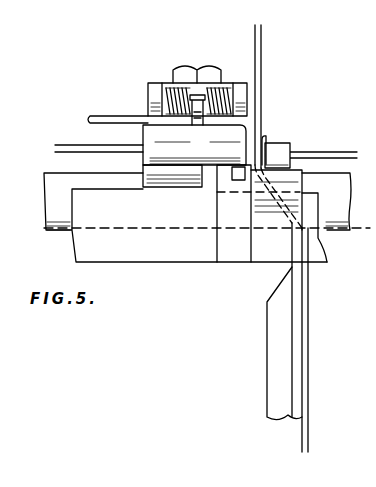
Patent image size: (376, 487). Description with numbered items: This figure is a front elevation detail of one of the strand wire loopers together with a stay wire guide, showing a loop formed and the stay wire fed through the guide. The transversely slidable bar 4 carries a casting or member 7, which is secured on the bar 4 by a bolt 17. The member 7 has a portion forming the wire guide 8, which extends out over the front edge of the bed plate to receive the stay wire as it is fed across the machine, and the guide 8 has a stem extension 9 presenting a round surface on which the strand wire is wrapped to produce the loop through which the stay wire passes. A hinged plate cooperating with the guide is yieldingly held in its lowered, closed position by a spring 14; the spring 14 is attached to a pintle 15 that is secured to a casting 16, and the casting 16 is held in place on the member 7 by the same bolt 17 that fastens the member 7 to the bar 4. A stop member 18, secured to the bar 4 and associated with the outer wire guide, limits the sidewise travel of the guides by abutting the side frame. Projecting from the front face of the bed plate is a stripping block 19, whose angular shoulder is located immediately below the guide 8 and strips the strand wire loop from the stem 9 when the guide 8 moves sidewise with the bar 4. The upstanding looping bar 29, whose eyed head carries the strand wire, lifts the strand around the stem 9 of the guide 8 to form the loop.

The bar 4 is at (55, 205).
The members 7 is at (157, 186).
The guide 8 is at (194, 145).
The stem extension 9 is at (277, 148).
The spring 14 is at (194, 120).
The pintle 15 is at (230, 93).
The casting 16 is at (233, 86).
The bolt 17 is at (190, 66).
The stop member 18 is at (100, 120).
The stripping block 19 is at (230, 205).
The looping bar 29 is at (272, 337).